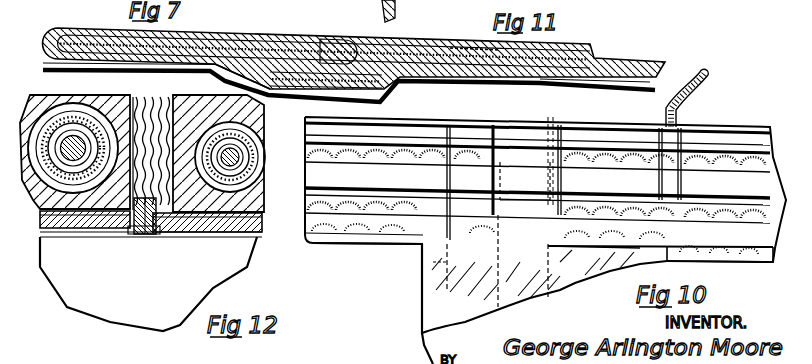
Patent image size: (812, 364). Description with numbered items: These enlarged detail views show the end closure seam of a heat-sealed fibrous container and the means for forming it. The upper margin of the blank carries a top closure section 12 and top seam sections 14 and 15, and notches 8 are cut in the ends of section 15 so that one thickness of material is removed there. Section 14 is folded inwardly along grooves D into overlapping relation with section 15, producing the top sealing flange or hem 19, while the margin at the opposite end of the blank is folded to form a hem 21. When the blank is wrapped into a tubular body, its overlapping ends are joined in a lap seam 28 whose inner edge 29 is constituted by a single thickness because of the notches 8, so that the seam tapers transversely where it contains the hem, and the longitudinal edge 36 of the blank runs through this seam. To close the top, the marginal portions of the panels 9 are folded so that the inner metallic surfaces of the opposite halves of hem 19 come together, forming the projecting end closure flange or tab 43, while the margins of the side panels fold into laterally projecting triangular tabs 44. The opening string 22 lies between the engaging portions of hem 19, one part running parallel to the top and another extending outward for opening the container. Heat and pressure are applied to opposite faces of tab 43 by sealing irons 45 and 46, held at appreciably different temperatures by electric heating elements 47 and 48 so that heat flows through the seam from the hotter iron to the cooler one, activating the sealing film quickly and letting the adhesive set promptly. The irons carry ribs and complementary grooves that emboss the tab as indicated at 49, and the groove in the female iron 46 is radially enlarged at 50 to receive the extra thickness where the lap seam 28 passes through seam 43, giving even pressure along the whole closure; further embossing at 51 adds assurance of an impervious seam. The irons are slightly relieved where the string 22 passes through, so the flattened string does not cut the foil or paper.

In FIG. 10, the notches 8 is at (490, 212).
In FIG. 10, the panels 9 is at (738, 254).
In FIG. 12, the top closure section 12 is at (40, 268).
In FIG. 12, the top seam section 14 is at (139, 238).
In FIG. 12, the top seam section 15 is at (143, 238).
In FIG. 11, the top sealing flange or hem 19 is at (96, 34).
In FIG. 12, the top sealing flange or hem 19 is at (132, 102).
In FIG. 11, the hem 21 is at (313, 60).
In FIG. 11, the string 22 is at (470, 57).
In FIG. 10, the string 22 is at (708, 86).
In FIG. 11, the lap seam 28 is at (287, 47).
In FIG. 11, the inner edge 29 is at (260, 42).
In FIG. 10, the inner edge 29 is at (447, 297).
In FIG. 10, the edge 36 is at (490, 298).
In FIG. 10, the end closure flange or tab 43 is at (585, 123).
In FIG. 10, the triangular tabs 44 is at (385, 240).
In FIG. 12, the sealing iron 45 is at (88, 231).
In FIG. 11, the sealing iron 46 is at (48, 22).
In FIG. 12, the sealing iron 46 is at (214, 234).
In FIG. 12, the electric heating element 47 is at (36, 206).
In FIG. 12, the electric heating element 48 is at (265, 184).
In FIG. 10, the embossed groove or rib 49 is at (592, 226).
In FIG. 11, the enlarged groove portion 50 is at (222, 89).
In FIG. 10, the enlarged groove portion 50 is at (512, 195).
In FIG. 12, the embossing 51 is at (168, 101).
In FIG. 10, the embossing 51 is at (712, 150).
In FIG. 11, the grooves D is at (224, 0).